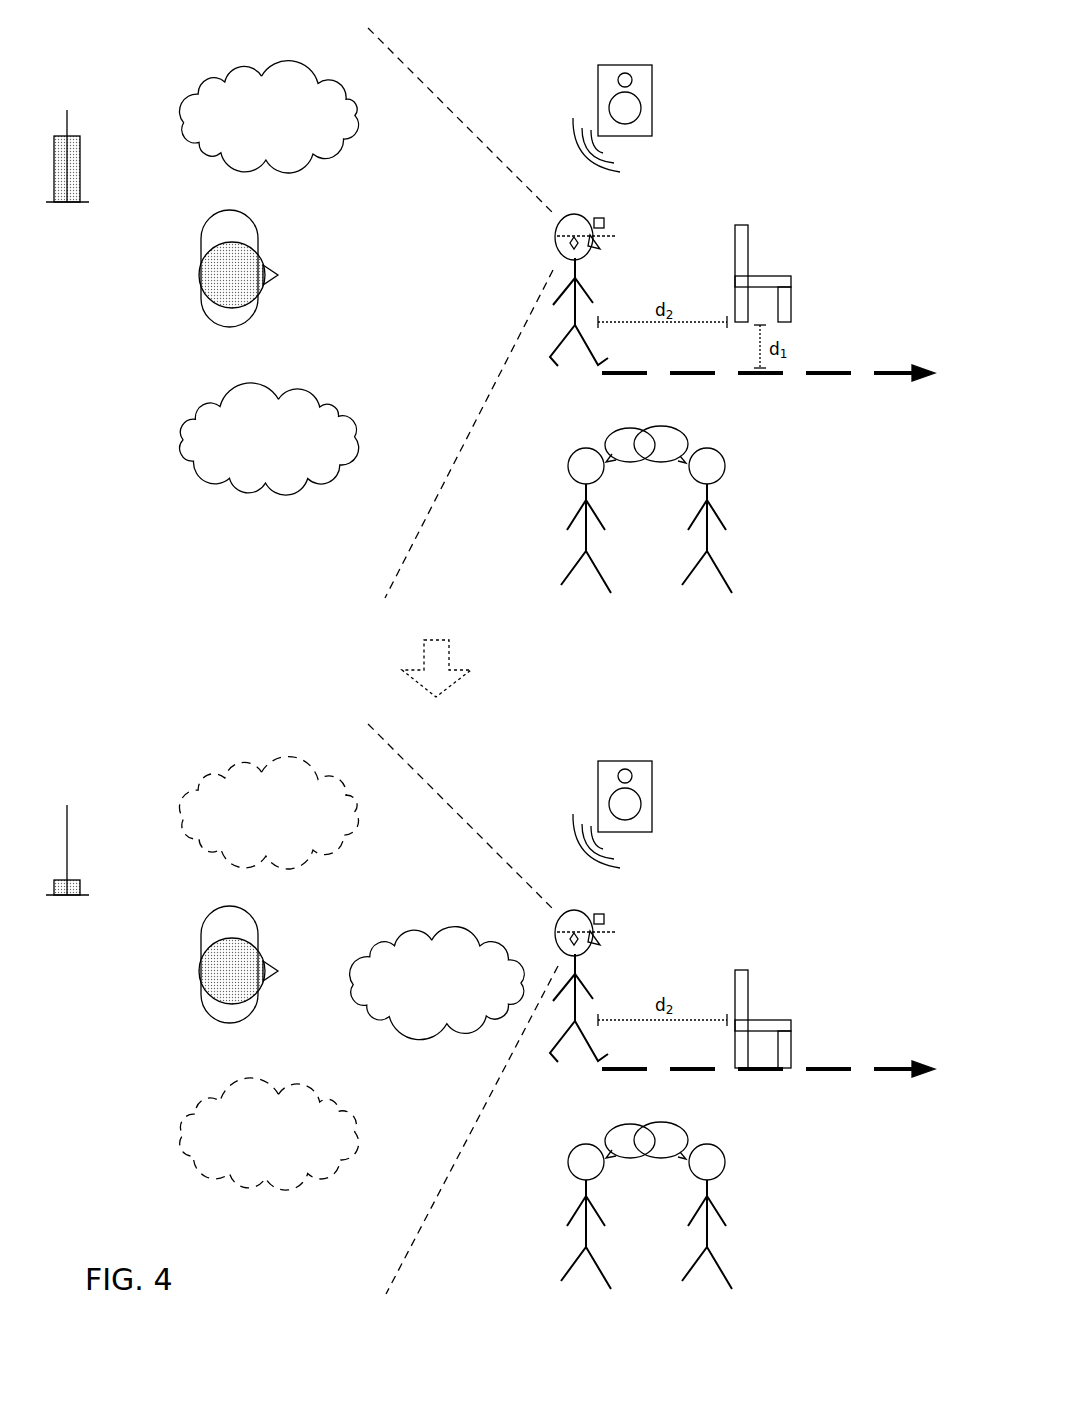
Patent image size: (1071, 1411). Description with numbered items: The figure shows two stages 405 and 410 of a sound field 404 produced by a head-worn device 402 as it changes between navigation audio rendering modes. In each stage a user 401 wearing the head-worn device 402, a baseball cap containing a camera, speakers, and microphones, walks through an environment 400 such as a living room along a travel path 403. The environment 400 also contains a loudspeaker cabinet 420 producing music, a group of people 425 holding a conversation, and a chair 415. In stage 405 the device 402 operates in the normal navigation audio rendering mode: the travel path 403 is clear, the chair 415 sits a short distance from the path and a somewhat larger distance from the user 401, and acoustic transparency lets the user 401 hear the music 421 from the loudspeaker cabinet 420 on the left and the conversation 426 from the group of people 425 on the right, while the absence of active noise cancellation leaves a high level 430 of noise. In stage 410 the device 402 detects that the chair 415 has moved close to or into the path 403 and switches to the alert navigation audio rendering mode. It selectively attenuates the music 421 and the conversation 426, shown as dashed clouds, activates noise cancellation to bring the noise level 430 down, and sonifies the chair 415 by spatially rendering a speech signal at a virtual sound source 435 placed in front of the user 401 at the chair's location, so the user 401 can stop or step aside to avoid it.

The environment 400 is at (745, 67).
The user 401 is at (258, 305).
The head-worn device 402 is at (568, 212).
The travel path 403 is at (822, 378).
The sound field 404 is at (98, 76).
The stage 405 is at (58, 298).
The stage 410 is at (58, 997).
The chair 415 is at (791, 283).
The loudspeaker cabinet 420 is at (652, 90).
The music 421 is at (312, 161).
The group of people 425 is at (758, 546).
The conversation 426 is at (312, 484).
The level of noise 430 is at (67, 532).
The virtual sound source 435 is at (425, 1027).